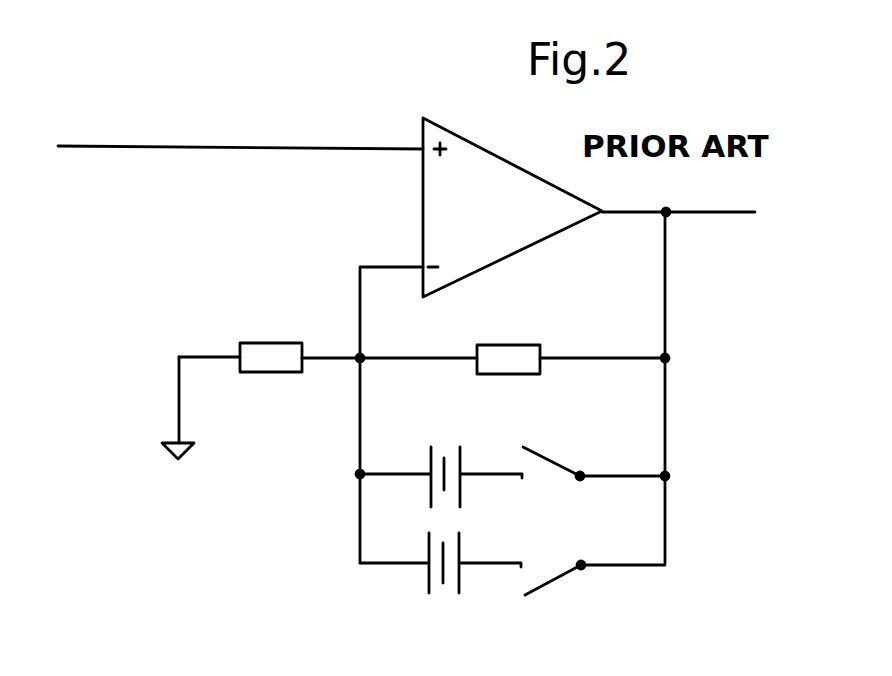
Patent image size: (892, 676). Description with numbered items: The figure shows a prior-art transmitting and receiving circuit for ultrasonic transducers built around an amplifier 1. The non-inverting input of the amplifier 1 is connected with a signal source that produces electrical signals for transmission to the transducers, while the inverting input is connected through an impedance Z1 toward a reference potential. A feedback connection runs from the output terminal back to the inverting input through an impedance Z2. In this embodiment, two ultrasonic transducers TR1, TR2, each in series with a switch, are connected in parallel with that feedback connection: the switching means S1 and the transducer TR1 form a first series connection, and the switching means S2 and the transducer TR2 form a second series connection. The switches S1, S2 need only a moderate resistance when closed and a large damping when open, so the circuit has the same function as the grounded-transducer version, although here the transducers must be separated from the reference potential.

The amplifier 1 is at (482, 218).
The impedance Z1 is at (269, 338).
The impedance Z2 is at (512, 341).
The ultrasonic transducer TR1 is at (441, 459).
The ultrasonic transducer TR2 is at (440, 585).
The switching means S1 is at (594, 452).
The switching means S2 is at (595, 595).